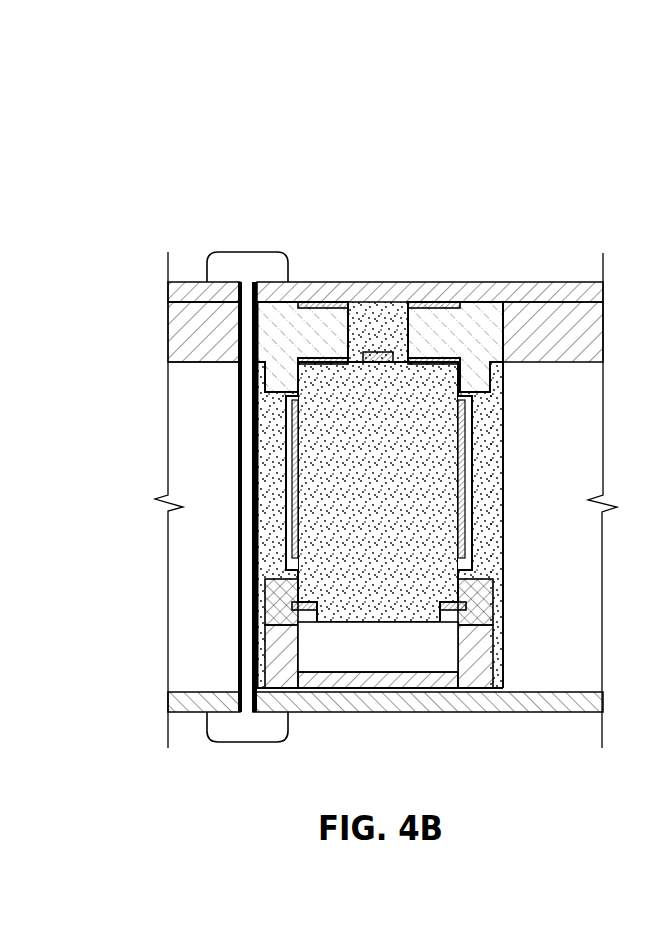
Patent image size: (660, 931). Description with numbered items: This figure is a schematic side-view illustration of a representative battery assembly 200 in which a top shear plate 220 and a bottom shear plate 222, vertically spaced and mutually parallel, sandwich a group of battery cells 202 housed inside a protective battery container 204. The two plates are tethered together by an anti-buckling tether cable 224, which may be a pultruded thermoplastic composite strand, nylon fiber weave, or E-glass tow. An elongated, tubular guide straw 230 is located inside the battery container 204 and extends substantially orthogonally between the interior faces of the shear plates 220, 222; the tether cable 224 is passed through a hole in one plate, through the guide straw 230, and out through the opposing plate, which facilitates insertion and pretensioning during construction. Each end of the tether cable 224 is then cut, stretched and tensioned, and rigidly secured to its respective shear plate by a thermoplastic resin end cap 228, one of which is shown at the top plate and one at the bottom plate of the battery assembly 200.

The battery assembly 200 is at (208, 121).
The battery cells 202 is at (357, 350).
The battery container 204 is at (137, 276).
The top shear plate 220 is at (485, 282).
The bottom shear plate 222 is at (487, 712).
The tether cable 224 is at (248, 449).
The end cap 228 is at (233, 252).
The guide straw 230 is at (237, 413).